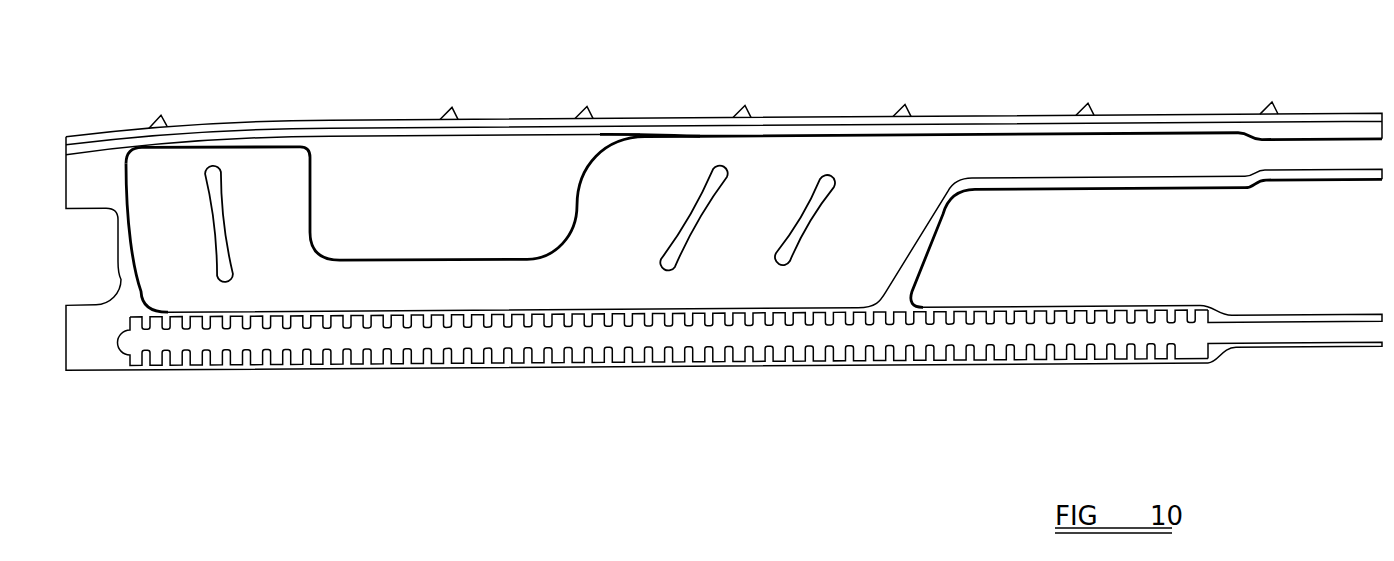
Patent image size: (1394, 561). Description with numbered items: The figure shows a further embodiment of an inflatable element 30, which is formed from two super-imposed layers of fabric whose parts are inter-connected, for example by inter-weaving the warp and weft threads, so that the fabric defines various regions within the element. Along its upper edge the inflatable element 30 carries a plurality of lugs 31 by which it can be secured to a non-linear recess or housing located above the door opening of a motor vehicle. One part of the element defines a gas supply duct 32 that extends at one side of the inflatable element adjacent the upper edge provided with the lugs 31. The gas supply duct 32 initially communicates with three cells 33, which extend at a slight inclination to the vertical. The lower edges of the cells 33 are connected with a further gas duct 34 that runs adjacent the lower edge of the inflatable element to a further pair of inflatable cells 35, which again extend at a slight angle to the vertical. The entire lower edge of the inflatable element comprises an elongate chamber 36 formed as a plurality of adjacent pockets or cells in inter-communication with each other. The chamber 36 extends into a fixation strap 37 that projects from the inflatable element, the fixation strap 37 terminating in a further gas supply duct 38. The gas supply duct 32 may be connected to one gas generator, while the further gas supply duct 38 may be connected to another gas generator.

The inflatable element 30 is at (764, 86).
The lugs 31 is at (163, 121).
The gas supply duct 32 is at (1198, 151).
The cells 33 is at (642, 220).
The further gas duct 34 is at (428, 283).
The inflatable cells 35 is at (167, 217).
The elongate chamber 36 is at (733, 337).
The fixation strap 37 is at (1077, 310).
The further gas supply duct 38 is at (1288, 337).